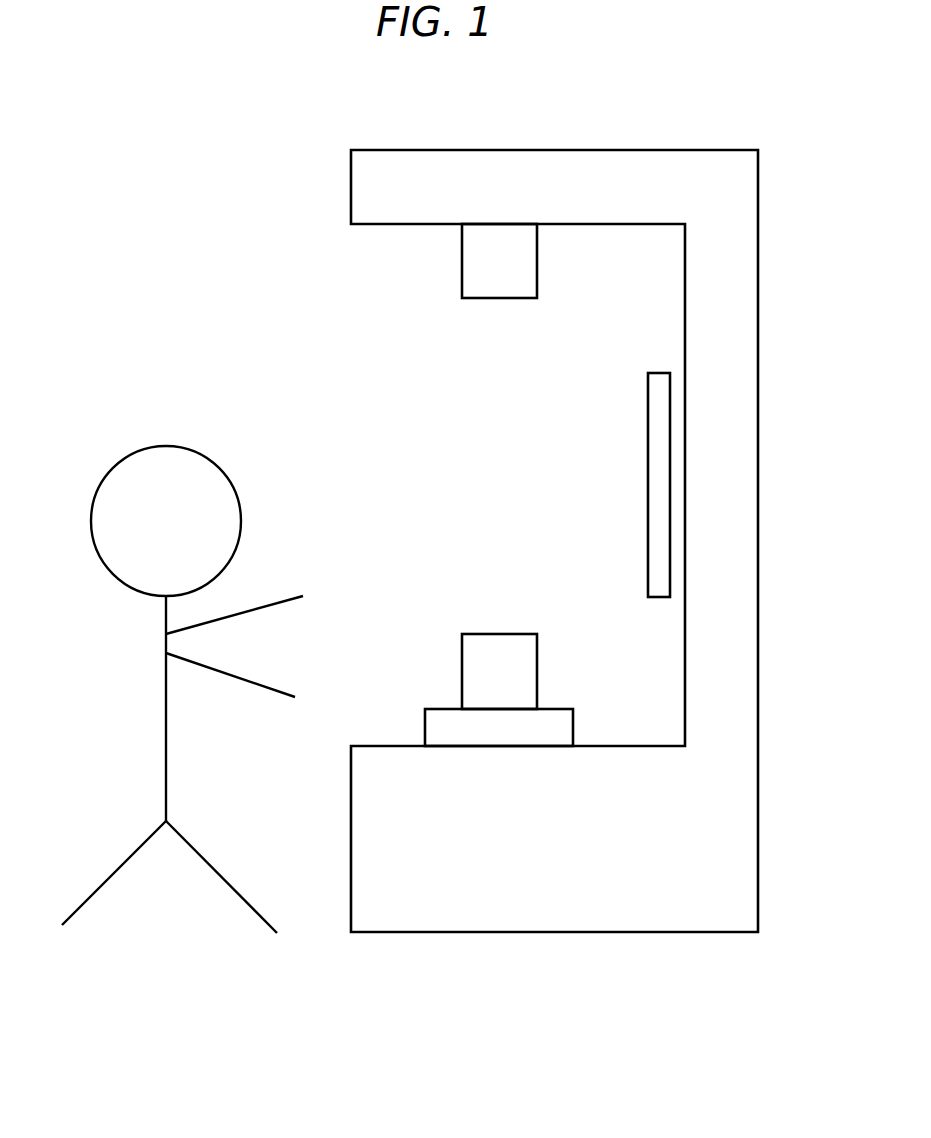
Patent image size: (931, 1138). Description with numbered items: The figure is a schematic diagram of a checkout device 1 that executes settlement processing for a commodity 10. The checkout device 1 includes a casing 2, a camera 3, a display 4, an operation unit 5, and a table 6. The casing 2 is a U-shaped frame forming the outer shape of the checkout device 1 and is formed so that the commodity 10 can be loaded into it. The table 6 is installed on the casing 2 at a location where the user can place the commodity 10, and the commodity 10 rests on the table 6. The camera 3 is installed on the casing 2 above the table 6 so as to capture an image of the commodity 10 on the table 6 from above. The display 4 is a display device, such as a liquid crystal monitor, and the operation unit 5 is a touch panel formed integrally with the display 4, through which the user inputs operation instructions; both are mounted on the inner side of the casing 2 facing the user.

The checkout device 1 is at (600, 116).
The casing 2 is at (759, 382).
The camera 3 is at (497, 300).
The display 4 is at (623, 485).
The operation unit 5 is at (647, 480).
The table 6 is at (424, 724).
The commodity 10 is at (499, 633).